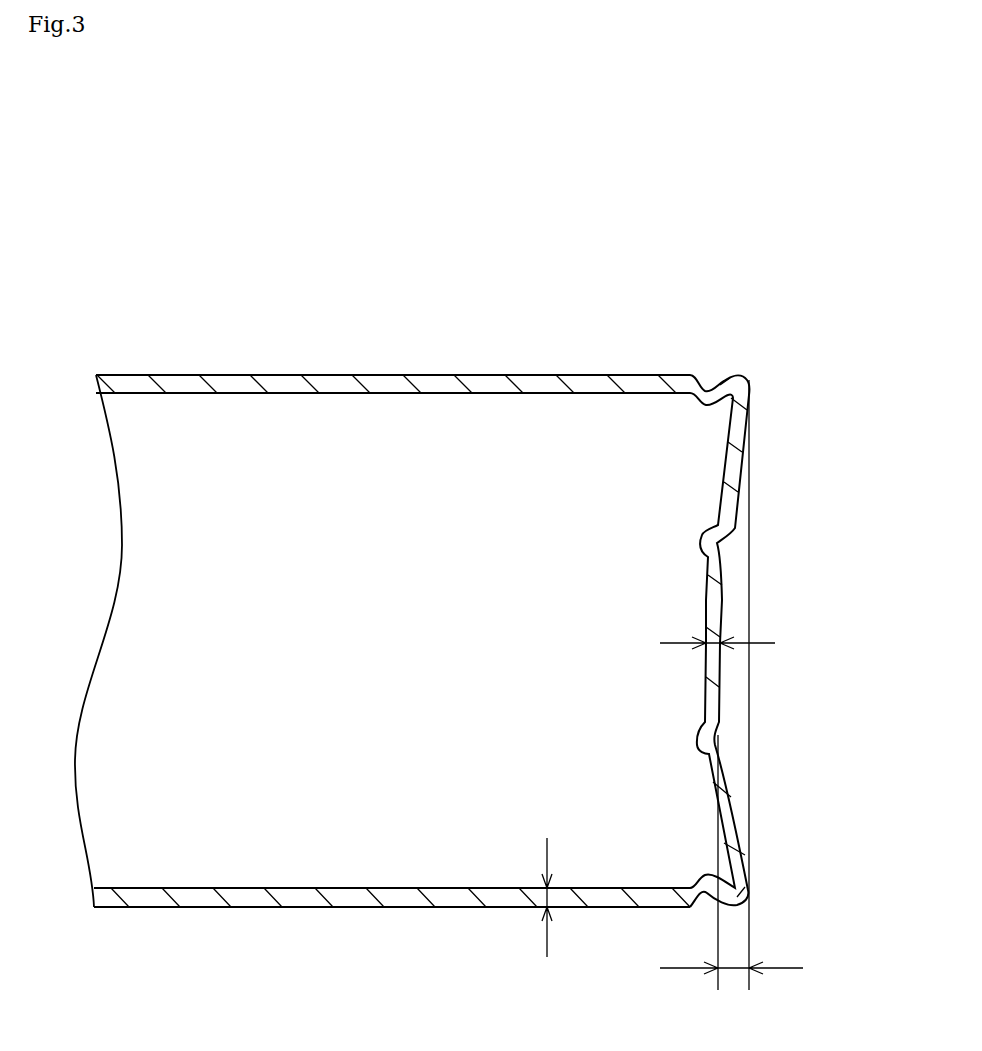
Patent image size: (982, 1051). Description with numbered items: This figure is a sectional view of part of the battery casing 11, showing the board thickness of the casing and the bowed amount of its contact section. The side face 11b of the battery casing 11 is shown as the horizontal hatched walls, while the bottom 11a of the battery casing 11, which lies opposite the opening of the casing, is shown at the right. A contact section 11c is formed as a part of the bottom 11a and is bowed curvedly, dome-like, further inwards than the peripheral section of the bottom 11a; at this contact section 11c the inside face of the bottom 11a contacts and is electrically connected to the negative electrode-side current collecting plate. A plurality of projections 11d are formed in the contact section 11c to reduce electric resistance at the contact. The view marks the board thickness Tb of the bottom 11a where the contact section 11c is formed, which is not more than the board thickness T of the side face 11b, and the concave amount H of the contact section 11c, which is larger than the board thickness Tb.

The battery casing 11 is at (536, 341).
The bottom 11a is at (772, 816).
The side face 11b is at (253, 898).
The contact section 11c is at (795, 515).
The projections 11d is at (700, 542).